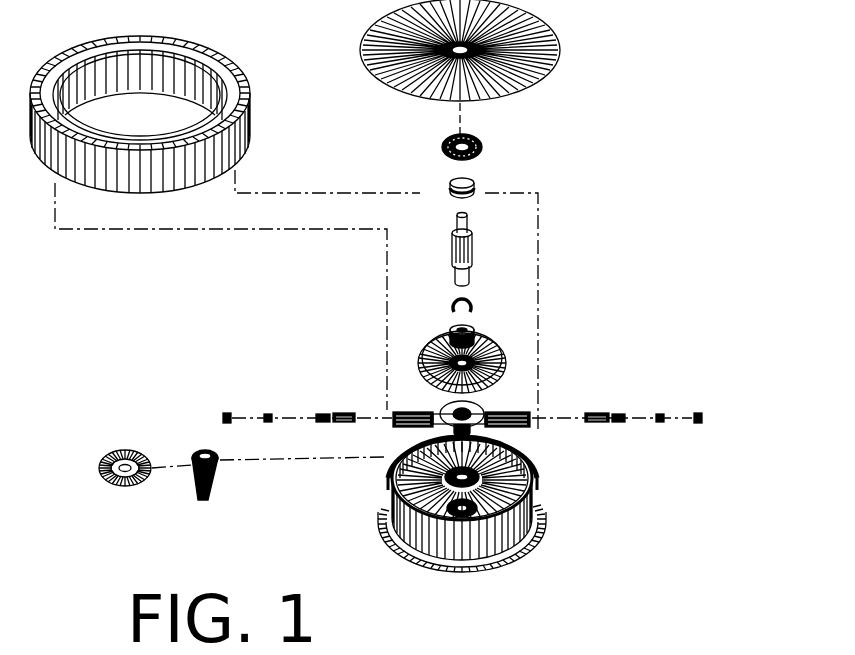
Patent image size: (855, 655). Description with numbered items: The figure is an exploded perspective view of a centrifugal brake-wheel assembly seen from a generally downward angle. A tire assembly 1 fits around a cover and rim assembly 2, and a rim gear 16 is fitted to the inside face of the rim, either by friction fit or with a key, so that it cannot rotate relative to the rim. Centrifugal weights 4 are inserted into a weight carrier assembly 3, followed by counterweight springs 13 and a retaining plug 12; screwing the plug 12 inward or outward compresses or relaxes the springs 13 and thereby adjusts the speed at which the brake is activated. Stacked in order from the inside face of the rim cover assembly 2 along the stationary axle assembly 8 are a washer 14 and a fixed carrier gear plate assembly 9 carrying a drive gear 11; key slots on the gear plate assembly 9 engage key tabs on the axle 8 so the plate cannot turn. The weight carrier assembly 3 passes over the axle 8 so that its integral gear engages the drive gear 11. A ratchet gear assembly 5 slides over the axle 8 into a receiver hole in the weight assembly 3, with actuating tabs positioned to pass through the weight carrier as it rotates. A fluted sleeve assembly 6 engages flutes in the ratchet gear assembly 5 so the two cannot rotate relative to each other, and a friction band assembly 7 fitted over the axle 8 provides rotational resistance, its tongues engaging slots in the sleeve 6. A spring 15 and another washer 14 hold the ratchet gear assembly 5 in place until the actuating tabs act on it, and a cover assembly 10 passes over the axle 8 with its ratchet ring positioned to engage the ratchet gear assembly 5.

The tire assembly 1 is at (202, 170).
The cover and rim assembly 2 is at (535, 535).
The weight carrier assembly 3 is at (527, 408).
The centrifugal weight 4 is at (337, 405).
The ratchet gear assembly 5 is at (503, 337).
The fluted sleeve assembly 6 is at (480, 318).
The friction band assembly 7 is at (473, 295).
The stationary axle assembly 8 is at (472, 225).
The fixed carrier gear plate assembly 9 is at (200, 443).
The cover assembly 10 is at (557, 76).
The drive gear 11 is at (112, 455).
The retaining plug 12 is at (226, 408).
The counterweight spring 13 is at (270, 425).
The washer 14 is at (440, 147).
The spring 15 is at (450, 193).
The rim gear 16 is at (392, 455).